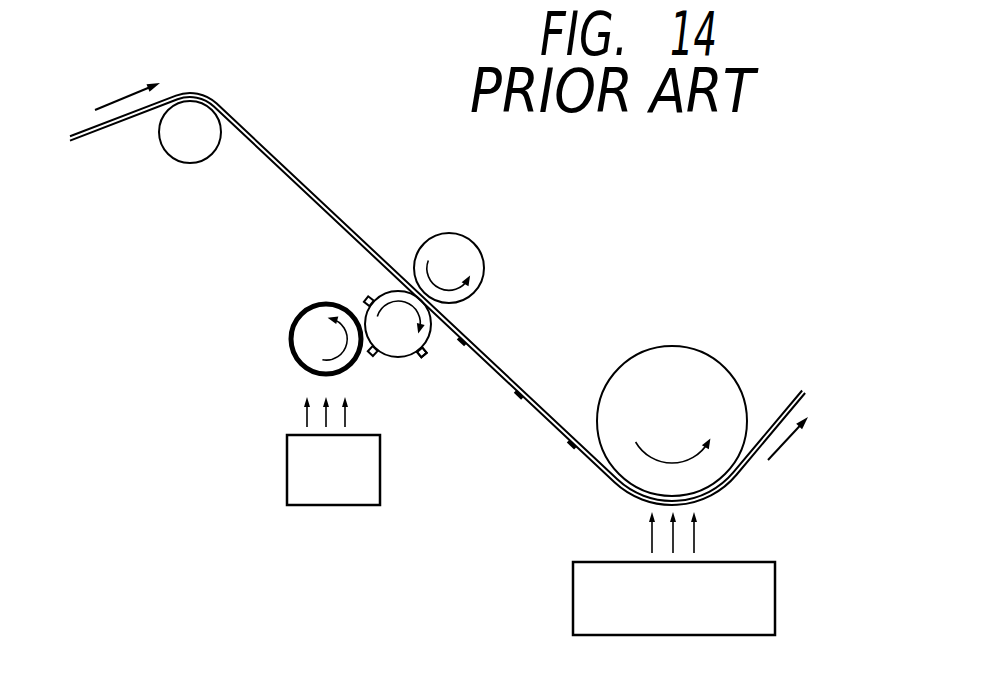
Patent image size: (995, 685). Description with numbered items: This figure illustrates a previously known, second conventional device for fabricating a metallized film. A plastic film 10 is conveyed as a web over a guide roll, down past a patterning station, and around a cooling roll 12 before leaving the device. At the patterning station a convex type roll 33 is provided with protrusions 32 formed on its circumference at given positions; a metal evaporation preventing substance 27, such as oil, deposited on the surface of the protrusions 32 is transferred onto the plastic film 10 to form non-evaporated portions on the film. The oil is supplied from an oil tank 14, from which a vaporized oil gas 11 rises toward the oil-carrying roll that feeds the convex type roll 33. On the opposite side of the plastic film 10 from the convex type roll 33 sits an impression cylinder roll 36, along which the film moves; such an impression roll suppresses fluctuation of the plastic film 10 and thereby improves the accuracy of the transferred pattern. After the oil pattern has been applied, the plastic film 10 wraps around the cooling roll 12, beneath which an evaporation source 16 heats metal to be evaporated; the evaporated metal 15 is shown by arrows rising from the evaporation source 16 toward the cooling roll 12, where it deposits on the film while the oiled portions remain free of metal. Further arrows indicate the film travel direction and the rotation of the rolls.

The plastic film 10 is at (277, 160).
The vaporized oil gas 11 is at (298, 417).
The cooling roll 12 is at (702, 358).
The oil tank 14 is at (287, 465).
The evaporated material 15 is at (702, 538).
The evaporation source 16 is at (777, 597).
The metal evaporation preventing substance 27 is at (432, 360).
The protrusions 32 is at (420, 357).
The convex type roll 33 is at (390, 297).
The impression cylinder roll 36 is at (465, 247).